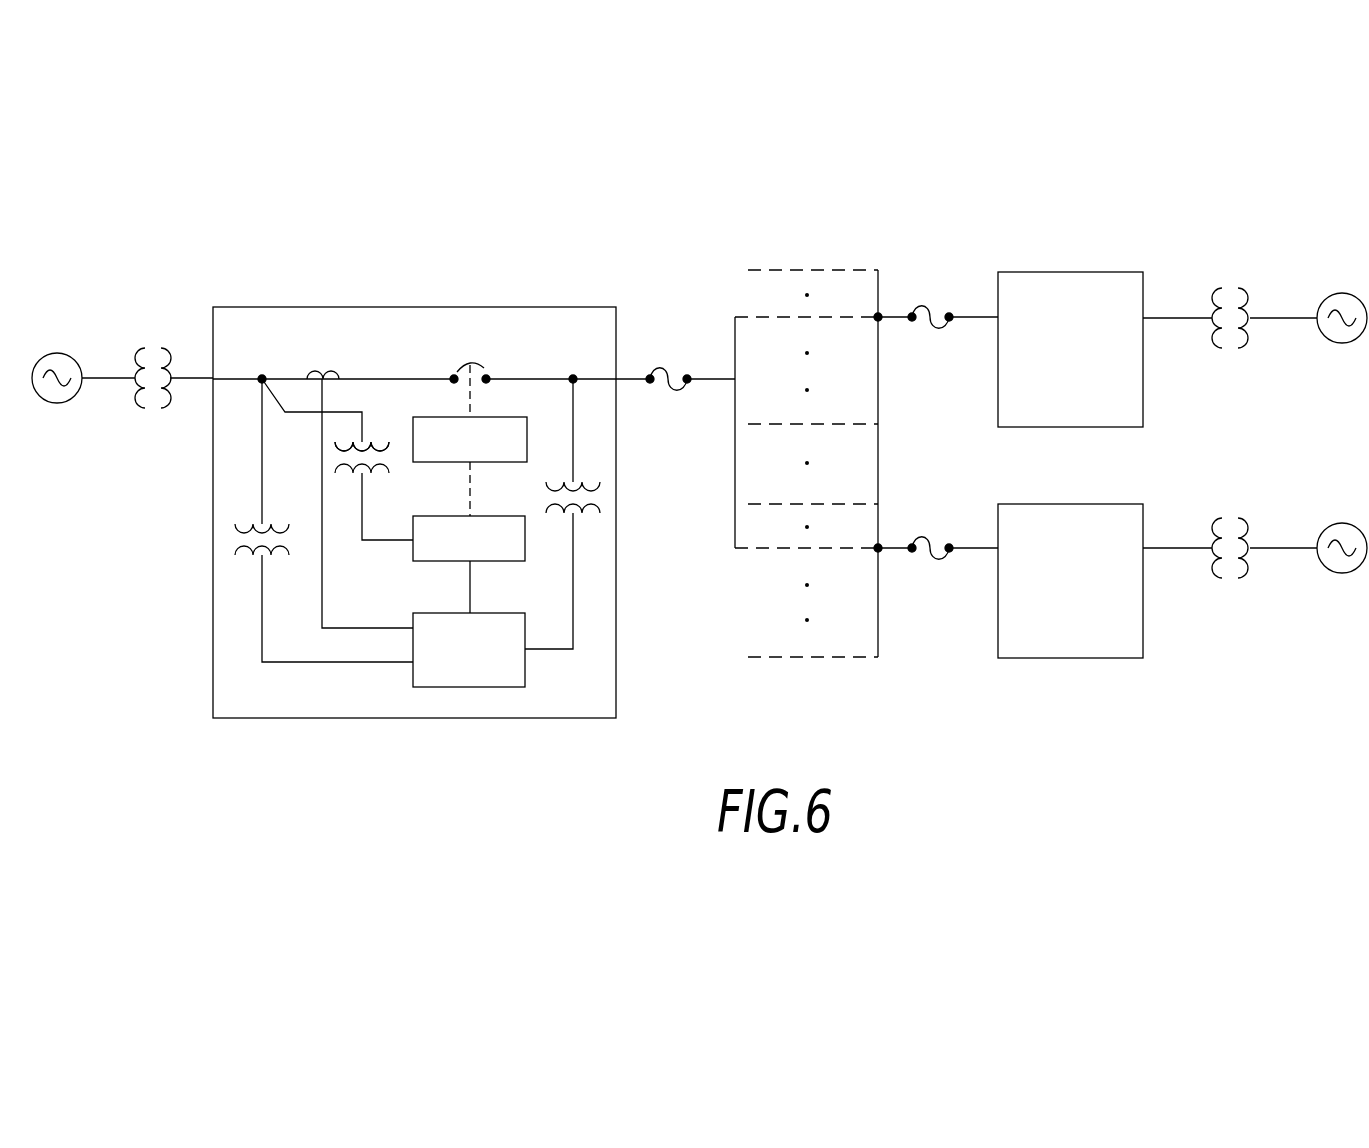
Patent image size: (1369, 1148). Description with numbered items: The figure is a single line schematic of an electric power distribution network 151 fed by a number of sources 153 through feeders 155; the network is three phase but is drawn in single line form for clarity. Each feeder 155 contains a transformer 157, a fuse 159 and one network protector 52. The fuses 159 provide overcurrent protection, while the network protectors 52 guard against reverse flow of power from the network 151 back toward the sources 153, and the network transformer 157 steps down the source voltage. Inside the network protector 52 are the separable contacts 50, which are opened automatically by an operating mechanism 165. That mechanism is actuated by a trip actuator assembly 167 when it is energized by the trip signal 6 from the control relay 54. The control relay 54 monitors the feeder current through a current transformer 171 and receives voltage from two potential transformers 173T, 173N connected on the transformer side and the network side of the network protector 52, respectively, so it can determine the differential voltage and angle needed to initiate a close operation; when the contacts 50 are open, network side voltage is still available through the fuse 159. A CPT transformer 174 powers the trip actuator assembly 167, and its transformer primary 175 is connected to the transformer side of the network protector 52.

The trip signal 6 is at (472, 588).
The separable contacts 50 is at (481, 365).
The network protector 52 is at (213, 675).
The control relay 54 is at (527, 676).
The electric power distribution network 151 is at (785, 383).
The source 153 is at (57, 403).
The feeder 155 is at (198, 318).
The transformer 157 is at (145, 410).
The fuse 159 is at (667, 366).
The operating mechanism 165 is at (432, 463).
The trip actuator assembly 167 is at (425, 562).
The current transformer 171 is at (316, 368).
The network side potential transformer 173N is at (587, 484).
The transformer side potential transformer 173T is at (240, 548).
The CPT transformer 174 is at (382, 436).
The transformer primary 175 is at (338, 452).